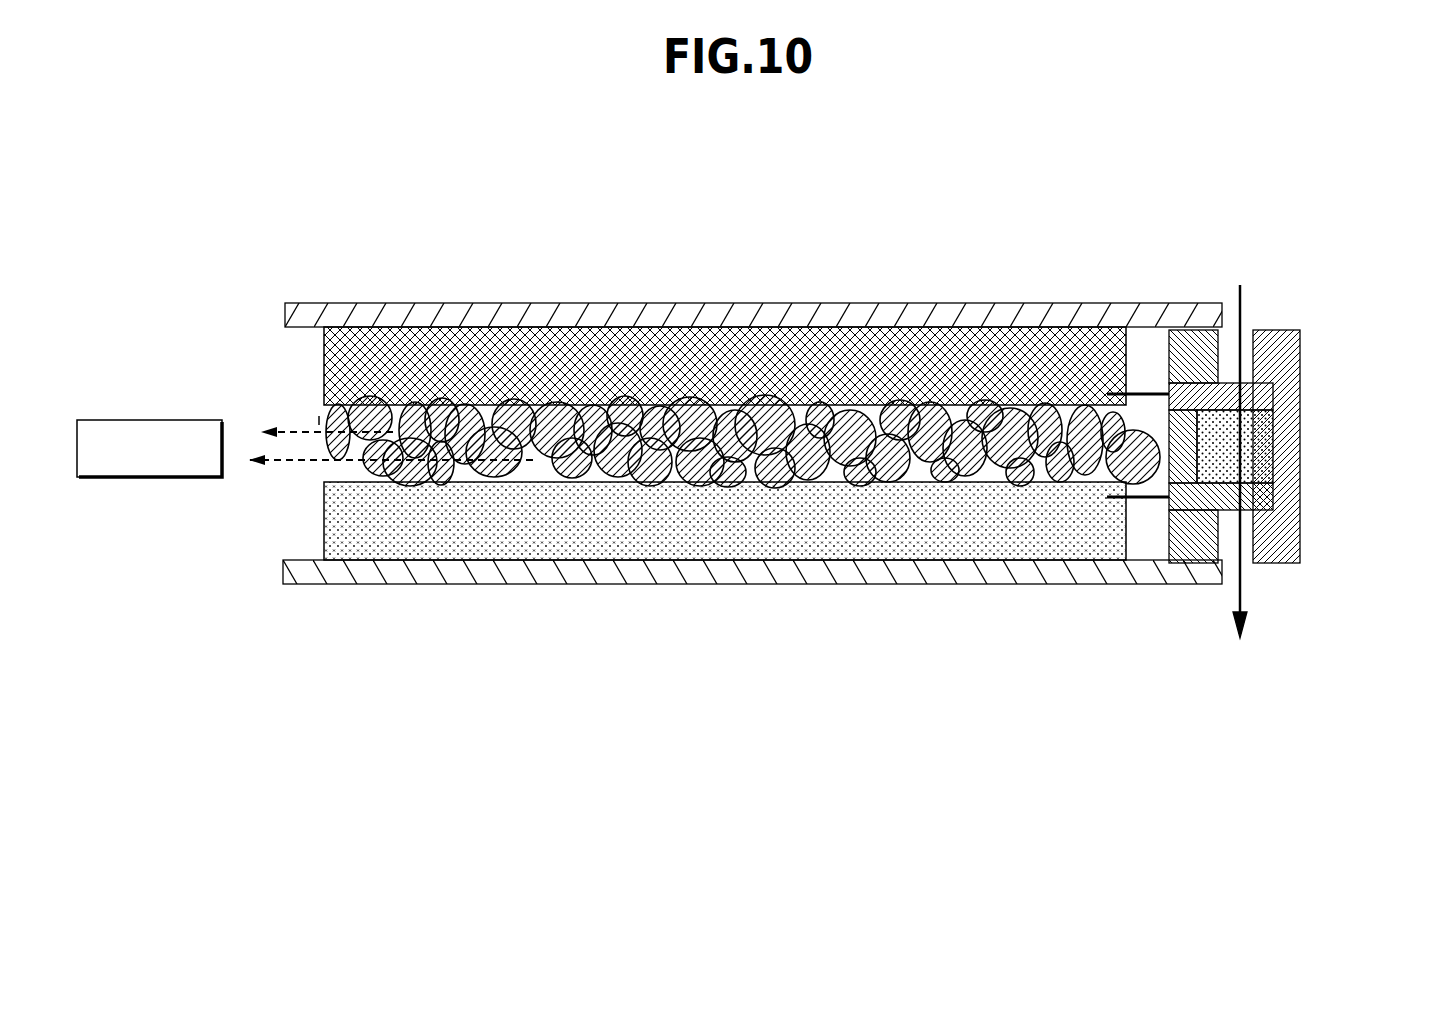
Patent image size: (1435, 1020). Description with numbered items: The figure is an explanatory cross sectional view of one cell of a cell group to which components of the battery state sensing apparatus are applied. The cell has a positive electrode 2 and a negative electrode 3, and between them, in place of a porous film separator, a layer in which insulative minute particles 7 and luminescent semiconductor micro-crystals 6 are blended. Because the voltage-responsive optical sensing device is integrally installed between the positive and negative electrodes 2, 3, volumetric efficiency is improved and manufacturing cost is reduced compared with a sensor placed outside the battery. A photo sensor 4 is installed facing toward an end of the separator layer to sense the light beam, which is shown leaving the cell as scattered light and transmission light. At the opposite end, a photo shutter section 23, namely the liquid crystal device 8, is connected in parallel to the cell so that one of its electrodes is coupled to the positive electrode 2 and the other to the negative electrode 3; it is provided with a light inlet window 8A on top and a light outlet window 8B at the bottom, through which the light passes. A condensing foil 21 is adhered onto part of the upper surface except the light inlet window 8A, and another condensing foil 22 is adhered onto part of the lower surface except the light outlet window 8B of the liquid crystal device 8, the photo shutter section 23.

The positive electrode 2 is at (746, 366).
The negative electrode 3 is at (746, 521).
The photo sensor 4 is at (302, 408).
The luminescent semiconductor micro-crystals 6 is at (413, 408).
The insulative minute particles 7 is at (677, 460).
The liquid crystal device 8 is at (1285, 388).
The light inlet window 8A is at (1245, 328).
The light outlet window 8B is at (1245, 568).
The condensing foil 21 is at (943, 302).
The condensing foil 22 is at (911, 586).
The photo shutter section 23 is at (1285, 425).